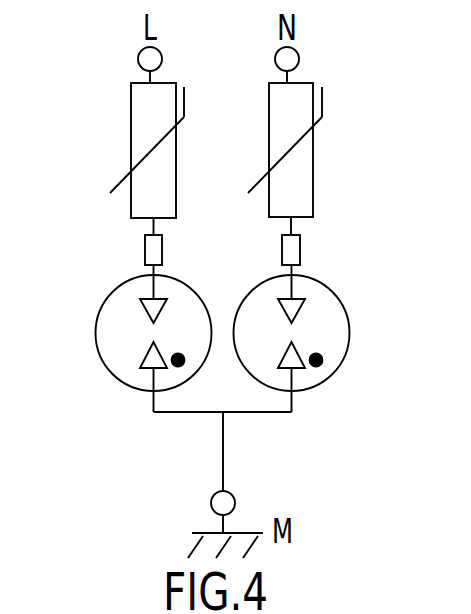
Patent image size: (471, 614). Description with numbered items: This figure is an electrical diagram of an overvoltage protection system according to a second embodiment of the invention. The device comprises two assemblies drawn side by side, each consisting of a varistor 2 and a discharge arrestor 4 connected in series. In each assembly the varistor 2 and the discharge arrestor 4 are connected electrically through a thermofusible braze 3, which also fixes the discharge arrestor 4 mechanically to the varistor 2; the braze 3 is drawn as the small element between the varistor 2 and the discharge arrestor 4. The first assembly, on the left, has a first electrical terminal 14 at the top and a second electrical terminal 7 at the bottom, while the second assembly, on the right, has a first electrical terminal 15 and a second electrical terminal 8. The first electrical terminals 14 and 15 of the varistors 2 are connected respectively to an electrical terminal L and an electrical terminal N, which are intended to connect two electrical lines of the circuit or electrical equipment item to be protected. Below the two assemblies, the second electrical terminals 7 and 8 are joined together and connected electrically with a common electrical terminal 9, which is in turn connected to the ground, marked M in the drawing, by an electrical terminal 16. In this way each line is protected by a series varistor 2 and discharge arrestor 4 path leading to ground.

The varistor 2 is at (131, 150).
The thermofusible braze 3 is at (145, 249).
The discharge arrestor 4 is at (95, 331).
The second electrical terminal 7 is at (192, 413).
The second electrical terminal 8 is at (255, 413).
The electrical terminal 9 is at (224, 440).
The first electrical terminal 14 is at (137, 60).
The first electrical terminal 15 is at (299, 58).
The electrical terminal 16 is at (211, 503).